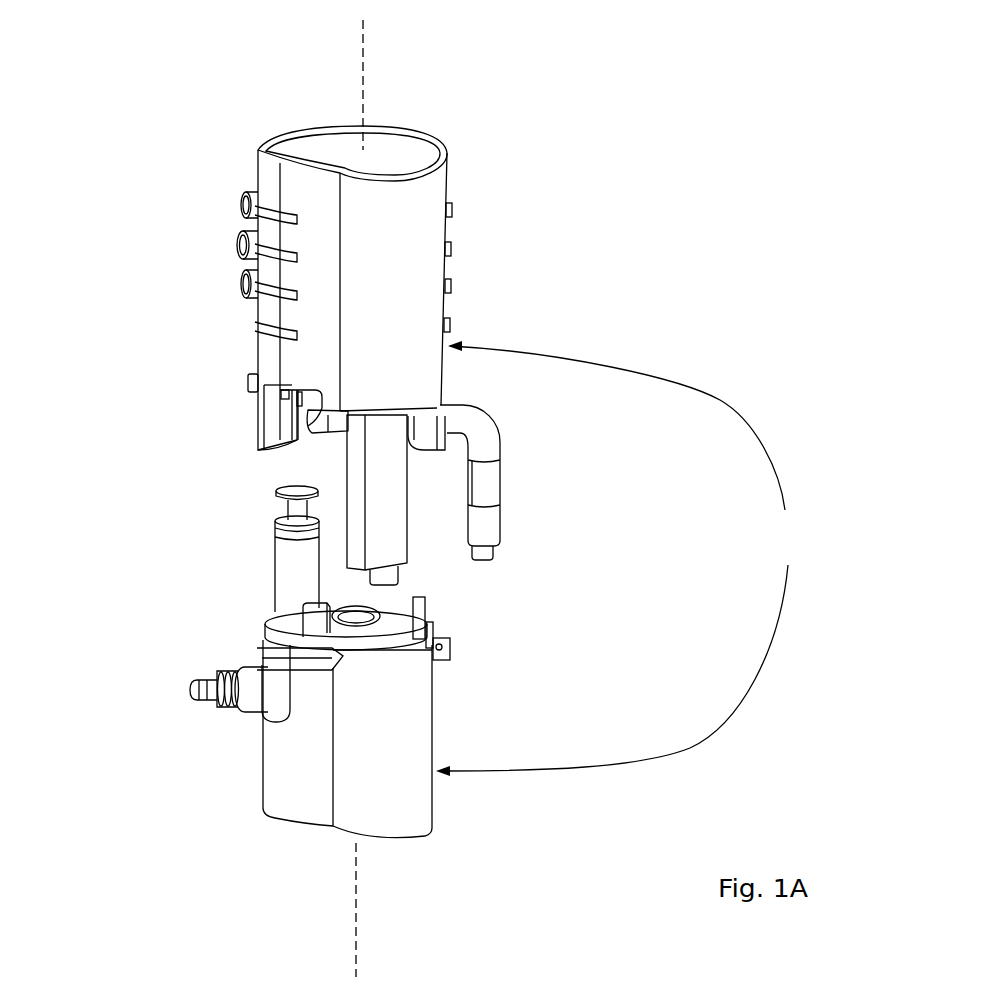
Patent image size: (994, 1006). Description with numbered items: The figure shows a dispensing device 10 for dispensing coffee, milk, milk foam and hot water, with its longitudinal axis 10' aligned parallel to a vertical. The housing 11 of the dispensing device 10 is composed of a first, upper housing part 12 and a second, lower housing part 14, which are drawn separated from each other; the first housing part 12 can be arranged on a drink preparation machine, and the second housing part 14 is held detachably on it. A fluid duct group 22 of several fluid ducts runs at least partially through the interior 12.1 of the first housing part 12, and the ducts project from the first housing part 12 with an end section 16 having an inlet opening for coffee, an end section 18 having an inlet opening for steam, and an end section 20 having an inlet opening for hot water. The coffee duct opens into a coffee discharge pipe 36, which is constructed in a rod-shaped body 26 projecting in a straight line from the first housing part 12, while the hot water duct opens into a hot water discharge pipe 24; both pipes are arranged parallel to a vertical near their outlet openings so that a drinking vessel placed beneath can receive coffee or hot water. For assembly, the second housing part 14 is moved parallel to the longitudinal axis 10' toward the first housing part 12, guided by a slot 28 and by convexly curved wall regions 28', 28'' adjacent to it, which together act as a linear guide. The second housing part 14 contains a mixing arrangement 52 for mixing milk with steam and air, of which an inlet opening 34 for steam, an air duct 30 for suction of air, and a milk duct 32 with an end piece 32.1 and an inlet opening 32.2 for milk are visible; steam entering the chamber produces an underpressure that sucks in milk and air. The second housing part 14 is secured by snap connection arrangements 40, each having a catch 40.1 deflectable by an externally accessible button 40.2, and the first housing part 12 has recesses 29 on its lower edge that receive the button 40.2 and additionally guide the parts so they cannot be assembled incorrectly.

The dispensing device 10 is at (424, 464).
The longitudinal axis 10' is at (395, 493).
The housing 11 is at (617, 558).
The first housing part 12 is at (432, 248).
The interior 12.1 is at (412, 437).
The second housing part 14 is at (433, 610).
The end section 16 is at (241, 202).
The end section 18 is at (237, 243).
The end section 20 is at (241, 282).
The fluid duct group 22 is at (155, 172).
The hot water discharge pipe 24 is at (483, 550).
The rod-shaped body 26 is at (390, 522).
The slot 28 is at (268, 452).
The wall region 28' is at (324, 447).
The wall region 28'' is at (239, 430).
The recess 29 is at (283, 384).
The air duct 30 is at (277, 525).
The milk duct 32 is at (225, 730).
The end piece 32.1 is at (198, 706).
The inlet opening 32.2 is at (190, 688).
The inlet opening 34 is at (340, 605).
The coffee discharge pipe 36 is at (388, 580).
The snap connection arrangement 40 is at (282, 613).
The catch 40.1 is at (278, 619).
The button 40.2 is at (262, 650).
The mixing arrangement 52 is at (252, 551).